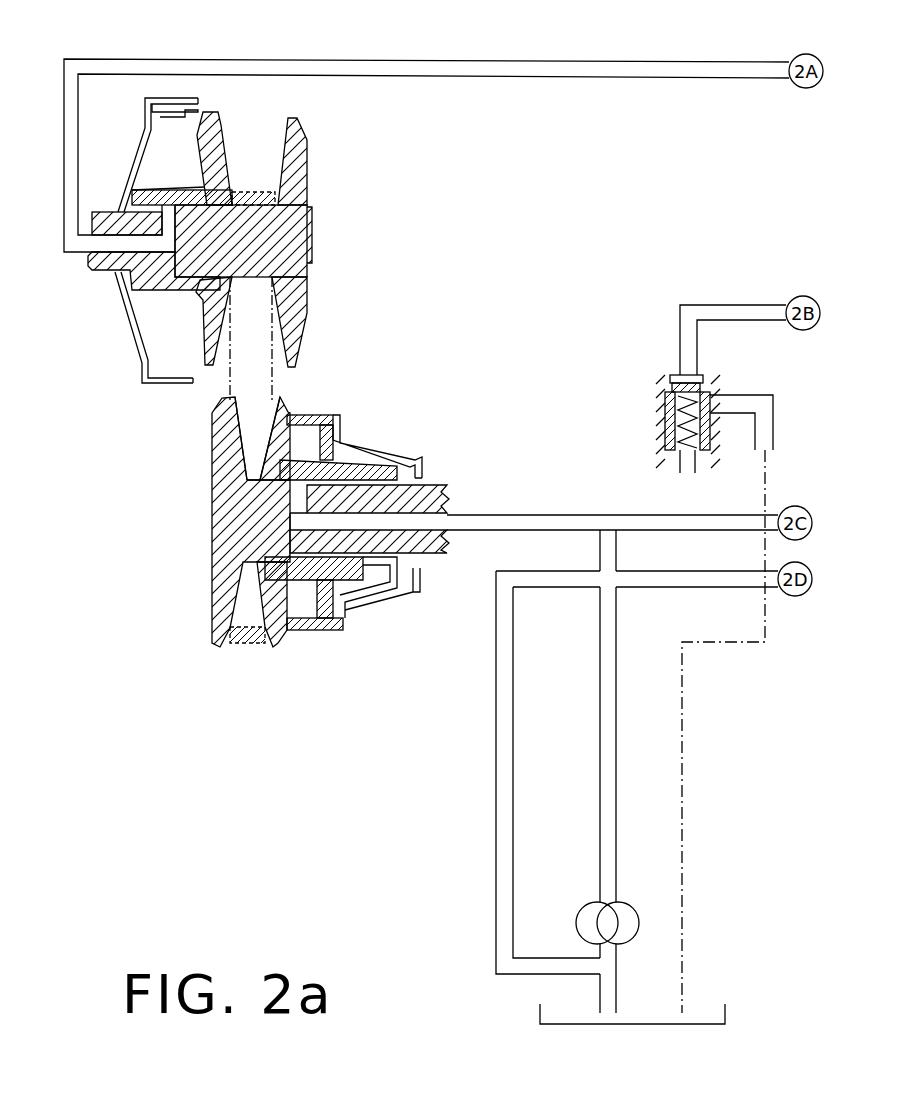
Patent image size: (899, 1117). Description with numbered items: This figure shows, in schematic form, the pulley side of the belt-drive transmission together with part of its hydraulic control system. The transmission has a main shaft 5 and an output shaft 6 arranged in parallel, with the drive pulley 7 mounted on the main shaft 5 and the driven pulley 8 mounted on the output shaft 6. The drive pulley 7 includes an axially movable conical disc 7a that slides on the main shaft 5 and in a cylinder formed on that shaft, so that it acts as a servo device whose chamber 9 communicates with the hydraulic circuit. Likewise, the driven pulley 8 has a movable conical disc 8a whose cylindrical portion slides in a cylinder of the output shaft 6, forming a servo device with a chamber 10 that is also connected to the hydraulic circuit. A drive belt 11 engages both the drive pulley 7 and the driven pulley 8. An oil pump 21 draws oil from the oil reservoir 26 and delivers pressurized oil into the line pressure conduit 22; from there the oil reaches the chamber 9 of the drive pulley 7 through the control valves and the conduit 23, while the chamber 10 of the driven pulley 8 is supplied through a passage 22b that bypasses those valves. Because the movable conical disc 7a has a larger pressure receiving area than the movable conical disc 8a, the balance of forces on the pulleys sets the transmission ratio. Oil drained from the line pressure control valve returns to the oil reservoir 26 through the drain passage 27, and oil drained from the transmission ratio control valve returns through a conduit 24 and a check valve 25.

The main shaft 5 is at (108, 270).
The output shaft 6 is at (437, 490).
The drive pulley 7 is at (312, 152).
The movable conical disc 7a is at (222, 130).
The driven pulley 8 is at (198, 565).
The movable conical disc 8a is at (268, 450).
The chamber 9 is at (173, 165).
The chamber 10 is at (378, 578).
The drive belt 11 is at (250, 648).
The oil pump 21 is at (626, 914).
The line pressure conduit 22 is at (733, 514).
The passage 22b is at (576, 513).
The conduit 23 is at (617, 61).
The conduit 24 is at (735, 304).
The check valve 25 is at (665, 420).
The oil reservoir 26 is at (748, 1005).
The drain passage 27 is at (650, 588).